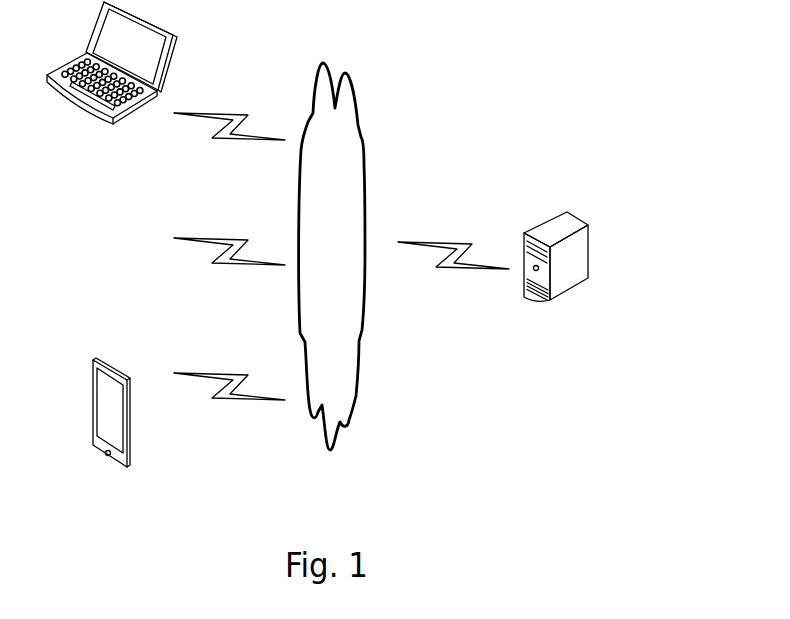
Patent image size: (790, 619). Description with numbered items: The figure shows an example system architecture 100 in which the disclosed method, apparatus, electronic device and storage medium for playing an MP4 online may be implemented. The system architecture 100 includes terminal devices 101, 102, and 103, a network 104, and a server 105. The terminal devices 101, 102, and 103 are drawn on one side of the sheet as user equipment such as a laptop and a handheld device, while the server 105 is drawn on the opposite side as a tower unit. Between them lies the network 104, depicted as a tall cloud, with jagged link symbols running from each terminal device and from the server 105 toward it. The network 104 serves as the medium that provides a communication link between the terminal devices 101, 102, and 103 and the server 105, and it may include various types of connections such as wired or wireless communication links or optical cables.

The system architecture 100 is at (583, 46).
The terminal device 101 is at (111, 432).
The terminal device 102 is at (108, 298).
The terminal device 103 is at (112, 78).
The network 104 is at (332, 256).
The server 105 is at (556, 277).